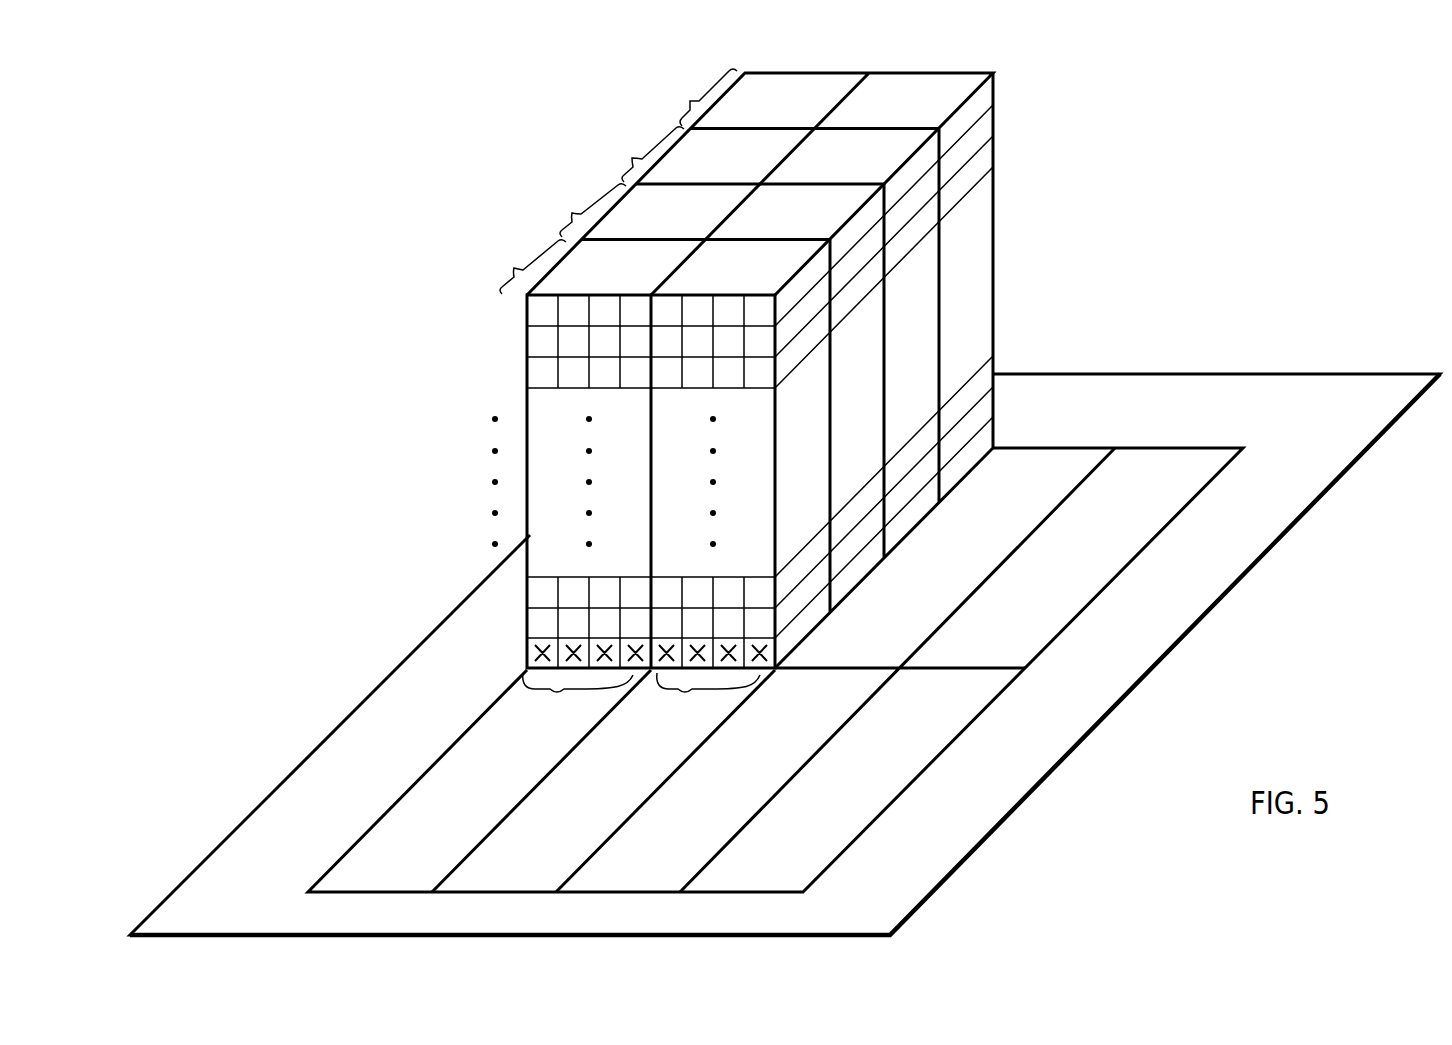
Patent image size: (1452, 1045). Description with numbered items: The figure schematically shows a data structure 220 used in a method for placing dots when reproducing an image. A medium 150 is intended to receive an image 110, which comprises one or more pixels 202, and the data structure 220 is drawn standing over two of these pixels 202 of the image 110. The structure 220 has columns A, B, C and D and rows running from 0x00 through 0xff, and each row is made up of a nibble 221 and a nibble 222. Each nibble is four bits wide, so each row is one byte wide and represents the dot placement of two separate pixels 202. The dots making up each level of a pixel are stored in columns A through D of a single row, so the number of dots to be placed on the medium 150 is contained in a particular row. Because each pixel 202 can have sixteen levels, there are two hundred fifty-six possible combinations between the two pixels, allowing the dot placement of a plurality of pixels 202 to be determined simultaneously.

The image 110 is at (1180, 430).
The medium 150 is at (1118, 374).
The pixels 202 is at (872, 788).
The data structure 220 is at (1005, 143).
The nibble 221 is at (557, 695).
The nibble 222 is at (685, 697).